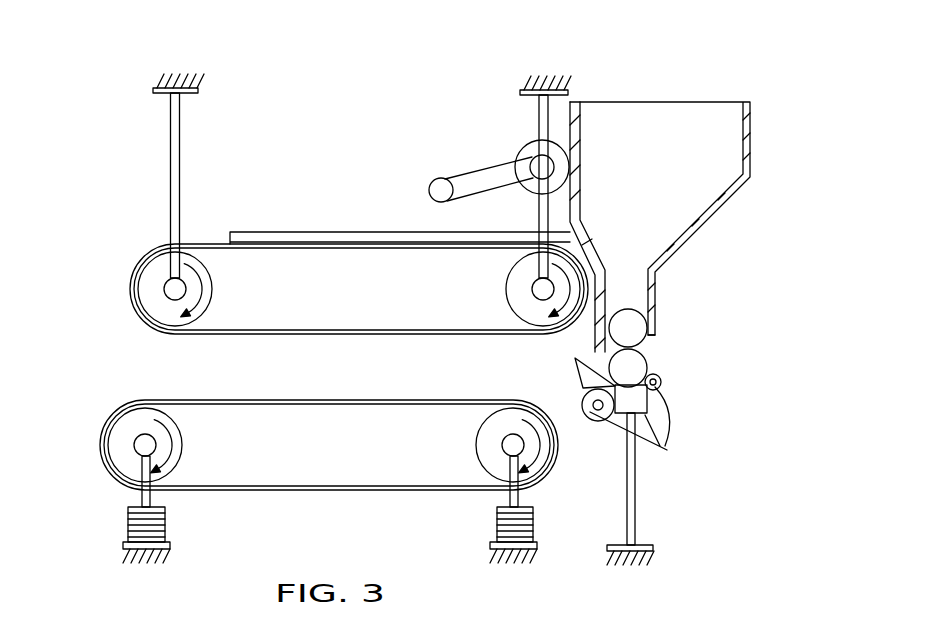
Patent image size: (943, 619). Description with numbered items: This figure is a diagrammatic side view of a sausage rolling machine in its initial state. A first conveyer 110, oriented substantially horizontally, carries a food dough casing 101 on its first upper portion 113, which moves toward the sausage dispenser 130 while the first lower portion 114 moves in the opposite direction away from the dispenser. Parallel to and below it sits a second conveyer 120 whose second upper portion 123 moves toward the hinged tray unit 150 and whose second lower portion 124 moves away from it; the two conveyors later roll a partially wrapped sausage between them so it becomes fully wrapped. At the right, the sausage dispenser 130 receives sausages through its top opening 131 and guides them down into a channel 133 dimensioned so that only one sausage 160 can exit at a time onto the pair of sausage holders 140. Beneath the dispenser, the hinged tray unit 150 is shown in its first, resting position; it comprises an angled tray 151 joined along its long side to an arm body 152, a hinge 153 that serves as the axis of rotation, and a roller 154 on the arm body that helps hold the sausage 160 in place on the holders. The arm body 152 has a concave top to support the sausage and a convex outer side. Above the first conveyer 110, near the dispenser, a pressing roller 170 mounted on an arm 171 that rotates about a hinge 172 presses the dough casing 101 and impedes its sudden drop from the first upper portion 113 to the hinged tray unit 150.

The food dough casing 101 is at (386, 232).
The first conveyer 110 is at (315, 233).
The first upper portion 113 is at (160, 247).
The first lower portion 114 is at (356, 338).
The second conveyer 120 is at (285, 453).
The second upper portion 123 is at (286, 399).
The second lower portion 124 is at (328, 491).
The sausage dispenser 130 is at (698, 198).
The top opening 131 is at (660, 102).
The channel 133 is at (656, 296).
The sausage holders 140 is at (663, 444).
The hinged tray unit 150 is at (627, 425).
The angled tray 151 is at (580, 360).
The arm body 152 is at (663, 412).
The hinge 153 is at (586, 422).
The roller 154 is at (662, 380).
The sausage 160 is at (645, 368).
The pressing roller 170 is at (521, 155).
The arm 171 is at (480, 176).
The hinge 172 is at (441, 180).